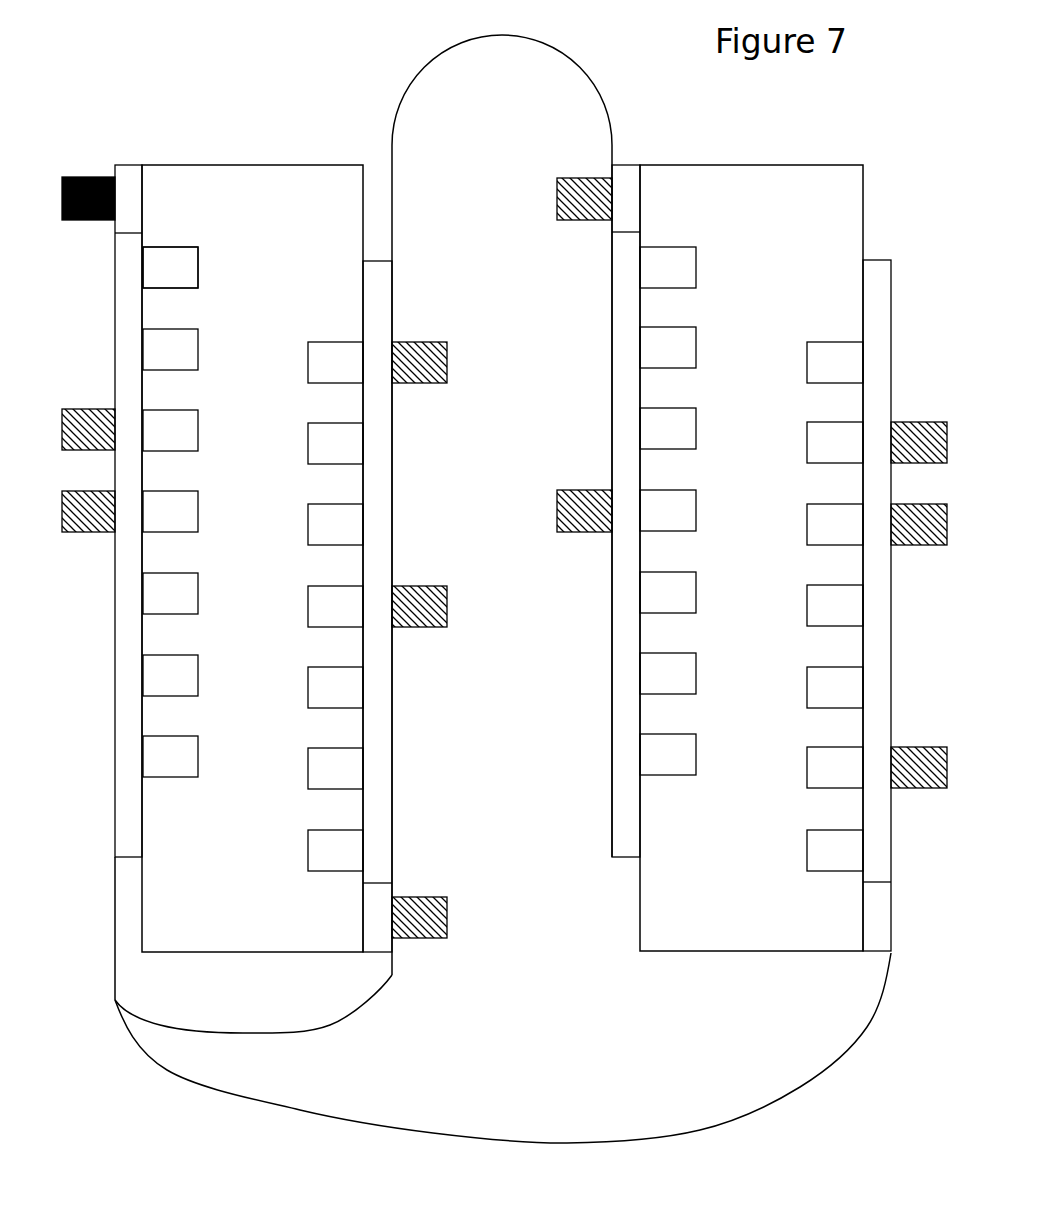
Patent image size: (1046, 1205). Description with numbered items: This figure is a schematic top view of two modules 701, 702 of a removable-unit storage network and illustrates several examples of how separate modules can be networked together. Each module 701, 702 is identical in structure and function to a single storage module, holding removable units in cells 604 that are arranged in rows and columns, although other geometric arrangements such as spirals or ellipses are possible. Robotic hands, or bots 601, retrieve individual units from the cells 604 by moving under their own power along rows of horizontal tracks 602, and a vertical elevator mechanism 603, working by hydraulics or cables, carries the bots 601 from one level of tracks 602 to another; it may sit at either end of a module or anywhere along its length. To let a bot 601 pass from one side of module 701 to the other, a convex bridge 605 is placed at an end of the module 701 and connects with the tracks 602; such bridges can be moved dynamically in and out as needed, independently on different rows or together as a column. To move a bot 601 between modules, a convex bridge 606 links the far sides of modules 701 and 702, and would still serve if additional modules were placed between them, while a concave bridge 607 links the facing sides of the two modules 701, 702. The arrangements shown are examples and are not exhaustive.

The bot 601 is at (418, 338).
The track 602 is at (394, 463).
The vertical elevator mechanism 603 is at (125, 160).
The cell 604 is at (170, 258).
The convex bridge 605 is at (338, 1036).
The convex bridge 606 is at (781, 1094).
The concave bridge 607 is at (556, 51).
The module 701 is at (212, 86).
The module 702 is at (781, 151).